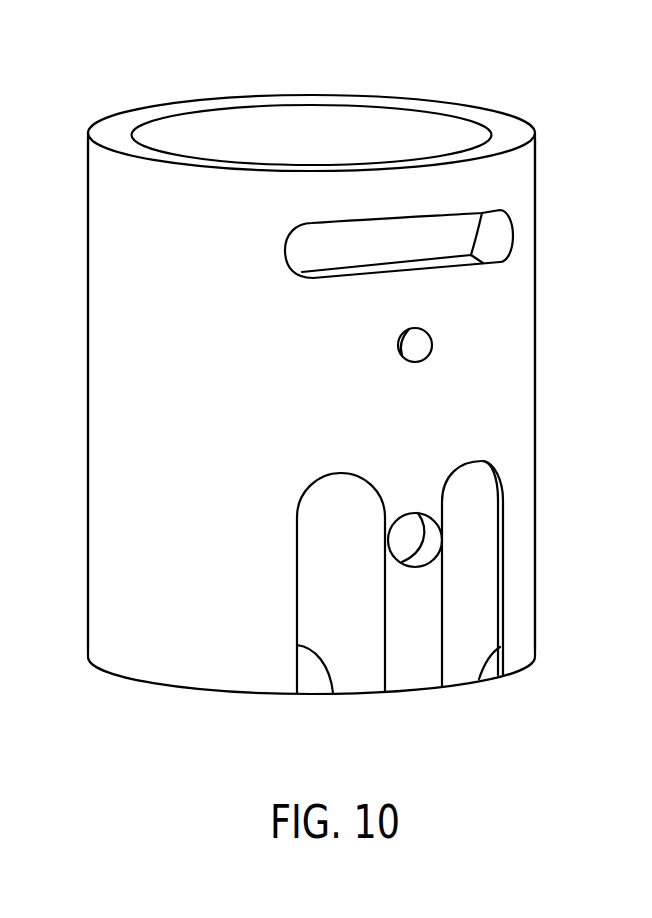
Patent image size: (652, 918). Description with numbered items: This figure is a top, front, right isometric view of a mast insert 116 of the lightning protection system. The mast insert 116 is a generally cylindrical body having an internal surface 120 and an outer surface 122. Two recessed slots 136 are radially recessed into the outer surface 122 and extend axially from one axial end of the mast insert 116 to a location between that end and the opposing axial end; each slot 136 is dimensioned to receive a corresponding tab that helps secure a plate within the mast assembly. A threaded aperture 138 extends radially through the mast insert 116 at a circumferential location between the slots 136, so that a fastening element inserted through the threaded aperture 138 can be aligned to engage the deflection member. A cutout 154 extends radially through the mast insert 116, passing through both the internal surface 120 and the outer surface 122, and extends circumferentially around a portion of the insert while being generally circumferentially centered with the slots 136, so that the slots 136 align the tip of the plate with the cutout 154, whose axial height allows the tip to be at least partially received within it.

The mast insert 116 is at (518, 107).
The internal surface 120 is at (376, 130).
The outer surface 122 is at (517, 178).
The cutout 154 is at (493, 232).
The threaded aperture 138 is at (427, 533).
The slots 136 is at (333, 690).